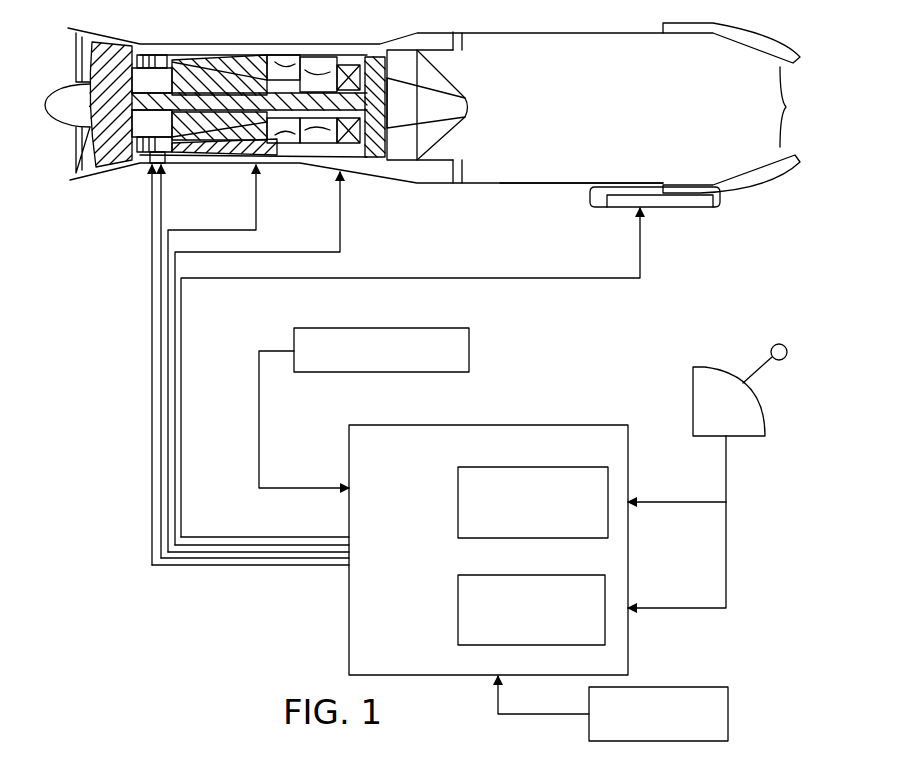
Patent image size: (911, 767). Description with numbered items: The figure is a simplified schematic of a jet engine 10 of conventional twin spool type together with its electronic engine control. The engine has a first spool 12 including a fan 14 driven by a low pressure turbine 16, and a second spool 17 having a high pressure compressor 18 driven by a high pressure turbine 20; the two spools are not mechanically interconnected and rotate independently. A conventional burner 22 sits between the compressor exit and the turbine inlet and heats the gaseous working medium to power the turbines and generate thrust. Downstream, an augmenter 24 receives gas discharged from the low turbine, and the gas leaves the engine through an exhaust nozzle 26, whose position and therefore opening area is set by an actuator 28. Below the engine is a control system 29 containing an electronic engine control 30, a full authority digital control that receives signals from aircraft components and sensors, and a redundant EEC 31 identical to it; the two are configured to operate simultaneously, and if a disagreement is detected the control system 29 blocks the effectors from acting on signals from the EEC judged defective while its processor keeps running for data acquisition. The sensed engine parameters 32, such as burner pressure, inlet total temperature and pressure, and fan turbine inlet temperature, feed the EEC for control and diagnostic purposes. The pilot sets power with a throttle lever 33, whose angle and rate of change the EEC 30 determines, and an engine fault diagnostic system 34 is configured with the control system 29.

The jet engine 10 is at (432, 32).
The first spool 12 is at (310, 97).
The fan 14 is at (110, 46).
The low pressure turbine 16 is at (377, 63).
The second spool 17 is at (282, 68).
The high pressure compressor 18 is at (192, 66).
The high pressure turbine 20 is at (347, 67).
The burner 22 is at (311, 137).
The augmenter 24 is at (535, 186).
The exhaust nozzle 26 is at (793, 162).
The actuator 28 is at (650, 208).
The control system 29 is at (349, 620).
The electronic engine control 30 is at (482, 466).
The redundant EEC 31 is at (458, 632).
The engine parameters 32 is at (469, 348).
The throttle lever 33 is at (708, 378).
The engine fault diagnostic system 34 is at (685, 687).